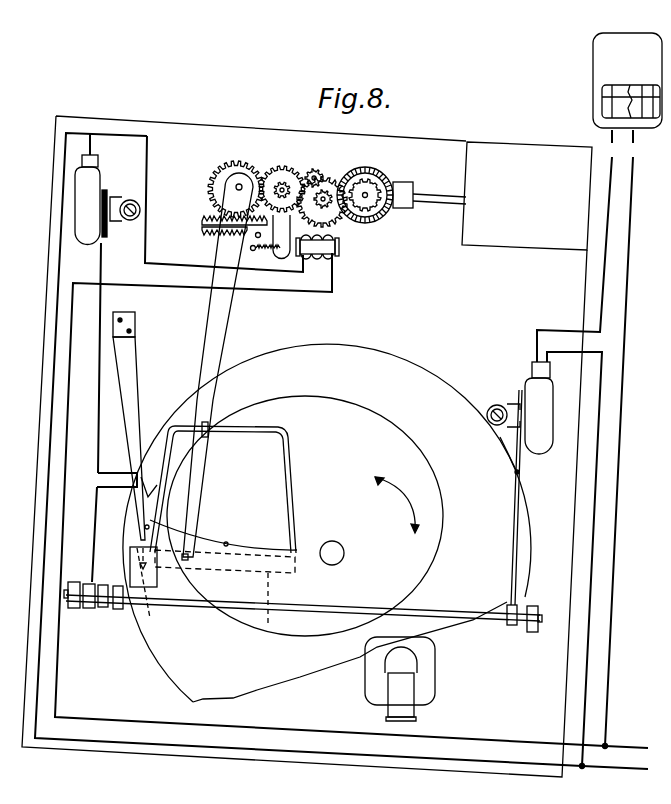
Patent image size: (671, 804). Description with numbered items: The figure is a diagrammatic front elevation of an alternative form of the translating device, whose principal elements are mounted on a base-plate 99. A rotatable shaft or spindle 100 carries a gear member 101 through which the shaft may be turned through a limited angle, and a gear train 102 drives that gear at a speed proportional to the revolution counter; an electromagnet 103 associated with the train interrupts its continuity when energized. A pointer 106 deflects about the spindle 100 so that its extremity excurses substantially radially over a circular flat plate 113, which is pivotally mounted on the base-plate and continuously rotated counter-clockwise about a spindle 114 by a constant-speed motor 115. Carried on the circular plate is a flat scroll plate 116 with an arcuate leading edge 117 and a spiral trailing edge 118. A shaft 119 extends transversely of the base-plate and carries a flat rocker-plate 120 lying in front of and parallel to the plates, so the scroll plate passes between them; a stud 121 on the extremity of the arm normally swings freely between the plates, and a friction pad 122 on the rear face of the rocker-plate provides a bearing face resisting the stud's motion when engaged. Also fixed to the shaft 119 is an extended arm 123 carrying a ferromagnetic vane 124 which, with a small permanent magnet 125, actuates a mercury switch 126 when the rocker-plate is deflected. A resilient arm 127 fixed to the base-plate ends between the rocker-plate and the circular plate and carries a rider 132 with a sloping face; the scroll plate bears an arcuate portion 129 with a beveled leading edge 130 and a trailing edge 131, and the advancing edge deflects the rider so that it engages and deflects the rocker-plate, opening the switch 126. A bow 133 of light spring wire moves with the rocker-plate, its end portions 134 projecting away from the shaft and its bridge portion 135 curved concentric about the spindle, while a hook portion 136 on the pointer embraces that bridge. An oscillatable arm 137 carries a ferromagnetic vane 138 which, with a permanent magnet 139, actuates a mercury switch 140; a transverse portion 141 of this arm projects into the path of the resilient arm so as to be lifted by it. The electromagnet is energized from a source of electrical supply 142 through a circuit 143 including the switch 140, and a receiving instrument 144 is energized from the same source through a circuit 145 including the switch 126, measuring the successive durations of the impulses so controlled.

The base-plate 99 is at (452, 144).
The shaft or spindle 100 is at (239, 184).
The gear member 101 is at (216, 166).
The gear train 102 is at (346, 172).
The electromagnet 103 is at (340, 249).
The pointer 106 is at (229, 320).
The circular flat plate 113 is at (431, 372).
The axis or spindle 114 is at (344, 551).
The constant-speed motor 115 is at (436, 683).
The scroll plate 116 is at (404, 447).
The arcuate leading edge 117 is at (227, 542).
The spiral trailing edge 118 is at (440, 483).
The shaft 119 is at (491, 613).
The rocker-plate 120 is at (232, 592).
The stud 121 is at (185, 556).
The friction pad 122 is at (245, 596).
The extended arm 123 is at (519, 472).
The ferromagnetic vane 124 is at (518, 393).
The permanent magnet 125 is at (494, 405).
The mercury switch 126 is at (550, 385).
The resilient arm 127 is at (137, 393).
The arcuate portion 129 is at (146, 527).
The beveled leading edge 130 is at (130, 549).
The trailing edge 131 is at (155, 490).
The rider 132 is at (119, 589).
The bow 133 is at (295, 470).
The end portions 134 is at (154, 502).
The bridge portion 135 is at (236, 432).
The hook portion 136 is at (209, 437).
The extended arm 137 is at (100, 264).
The ferromagnetic vane 138 is at (108, 191).
The permanent magnet 139 is at (119, 222).
The mercury switch 140 is at (98, 173).
The transverse portion 141 is at (110, 482).
The source of electrical supply 142 is at (643, 748).
The circuit 143 is at (168, 287).
The receiving instrument 144 is at (620, 44).
The circuit 145 is at (603, 395).